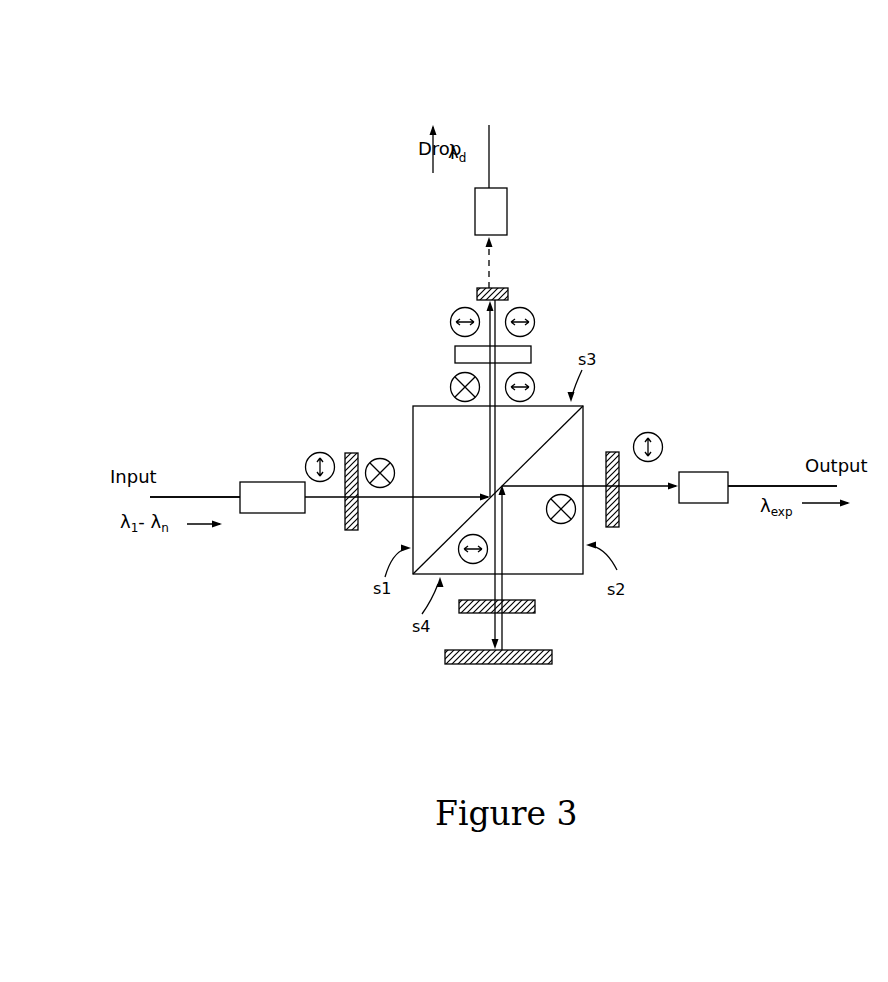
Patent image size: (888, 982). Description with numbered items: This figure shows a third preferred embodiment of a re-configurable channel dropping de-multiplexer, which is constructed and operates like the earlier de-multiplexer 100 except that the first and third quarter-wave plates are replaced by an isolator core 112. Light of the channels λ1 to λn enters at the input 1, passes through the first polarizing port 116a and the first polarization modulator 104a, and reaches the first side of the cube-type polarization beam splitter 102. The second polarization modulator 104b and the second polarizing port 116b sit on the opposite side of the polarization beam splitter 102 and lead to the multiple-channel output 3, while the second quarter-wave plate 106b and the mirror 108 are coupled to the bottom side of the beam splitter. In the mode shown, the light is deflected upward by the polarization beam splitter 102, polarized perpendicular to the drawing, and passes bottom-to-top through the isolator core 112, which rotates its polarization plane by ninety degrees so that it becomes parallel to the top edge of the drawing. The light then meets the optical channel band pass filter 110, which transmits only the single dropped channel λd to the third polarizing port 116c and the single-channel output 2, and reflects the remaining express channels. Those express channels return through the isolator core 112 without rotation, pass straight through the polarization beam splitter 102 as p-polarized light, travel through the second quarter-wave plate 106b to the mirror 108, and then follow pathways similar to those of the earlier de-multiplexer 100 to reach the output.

The re-configurable channel dropping de-multiplexer 100 is at (291, 131).
The input 1 is at (207, 494).
The single-channel output 2 is at (491, 153).
The multiple-channel output 3 is at (778, 482).
The polarization beam splitter 102 is at (415, 405).
The first polarization modulator 104a is at (342, 527).
The second polarization modulator 104b is at (619, 523).
The second quarter-wave plate 106b is at (536, 609).
The mirror 108 is at (467, 665).
The optical channel band pass filter 110 is at (509, 294).
The isolator core 112 is at (455, 353).
The first polarizing port 116a is at (273, 482).
The second polarizing port 116b is at (703, 471).
The third polarizing port 116c is at (508, 212).